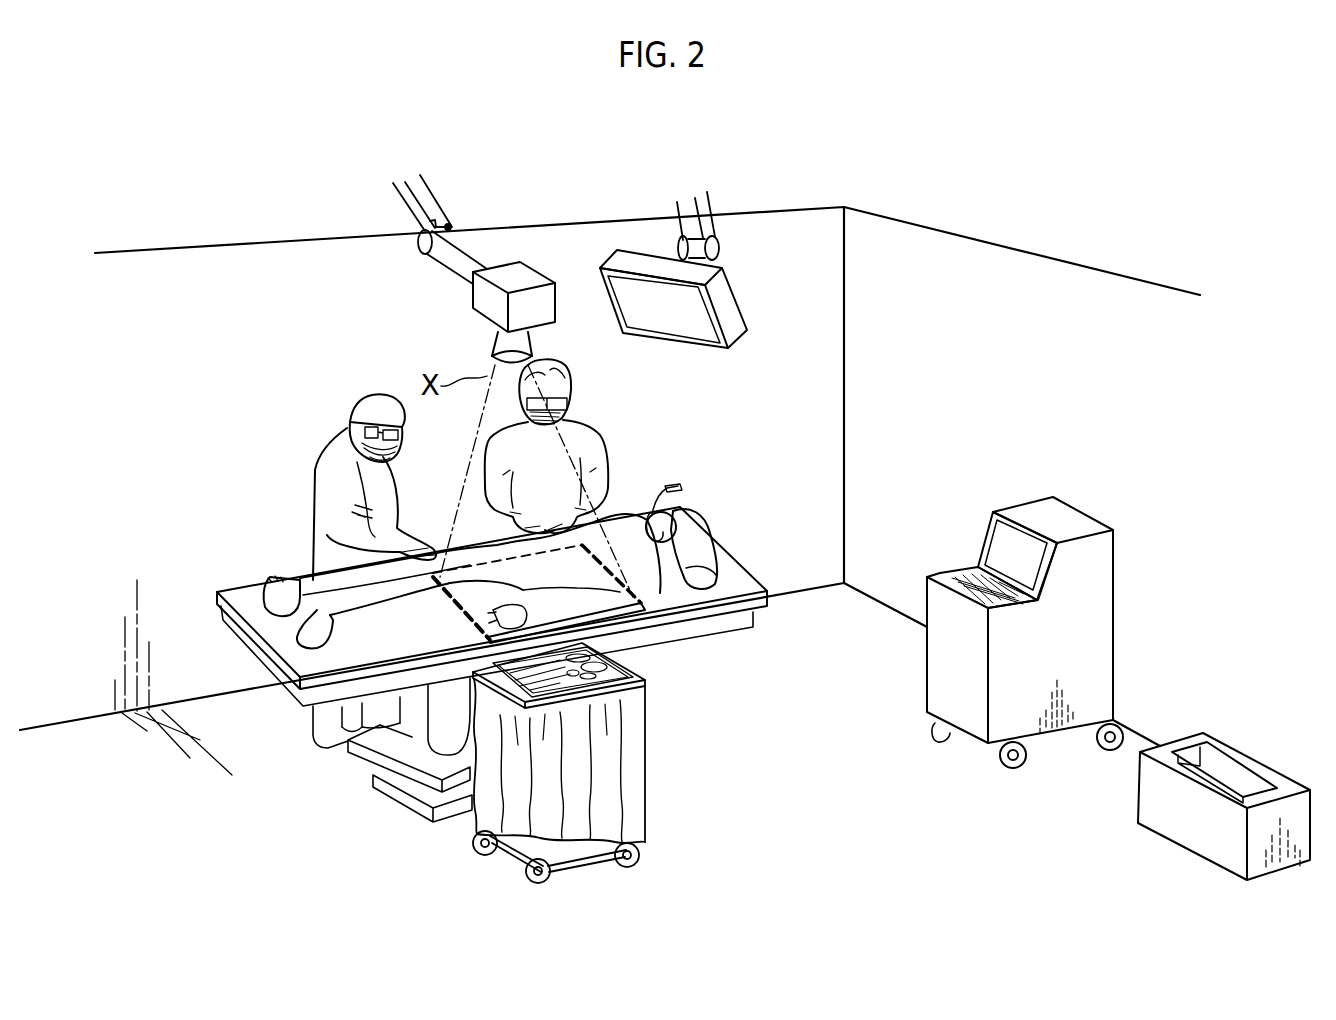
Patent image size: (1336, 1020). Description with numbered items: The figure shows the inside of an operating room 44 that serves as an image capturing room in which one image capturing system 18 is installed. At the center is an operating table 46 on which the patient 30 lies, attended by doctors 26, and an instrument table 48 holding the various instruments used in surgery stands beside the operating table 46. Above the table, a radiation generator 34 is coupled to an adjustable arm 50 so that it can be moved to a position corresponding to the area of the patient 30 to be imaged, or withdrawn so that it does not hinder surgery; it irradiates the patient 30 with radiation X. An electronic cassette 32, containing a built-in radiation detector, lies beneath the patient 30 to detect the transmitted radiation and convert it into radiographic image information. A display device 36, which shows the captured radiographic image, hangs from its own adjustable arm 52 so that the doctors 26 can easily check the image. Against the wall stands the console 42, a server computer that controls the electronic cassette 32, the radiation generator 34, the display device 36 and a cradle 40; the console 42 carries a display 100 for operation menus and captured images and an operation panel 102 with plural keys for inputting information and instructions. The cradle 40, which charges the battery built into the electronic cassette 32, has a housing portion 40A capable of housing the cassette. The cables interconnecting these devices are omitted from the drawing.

The image capturing system 18 is at (749, 452).
The doctors 26 is at (321, 494).
The patient 30 is at (306, 582).
The electronic cassette 32 is at (476, 631).
The radiation generator 34 is at (466, 301).
The display device 36 is at (737, 284).
The cradle 40 is at (1212, 790).
The housing portion 40A is at (1229, 774).
The console 42 is at (933, 676).
The operating room 44 is at (846, 278).
The operating table 46 is at (247, 589).
The instrument table 48 is at (616, 725).
The adjustable arm 50 is at (429, 203).
The adjustable arm 52 is at (700, 203).
The display 100 is at (1008, 540).
The operation panel 102 is at (960, 570).